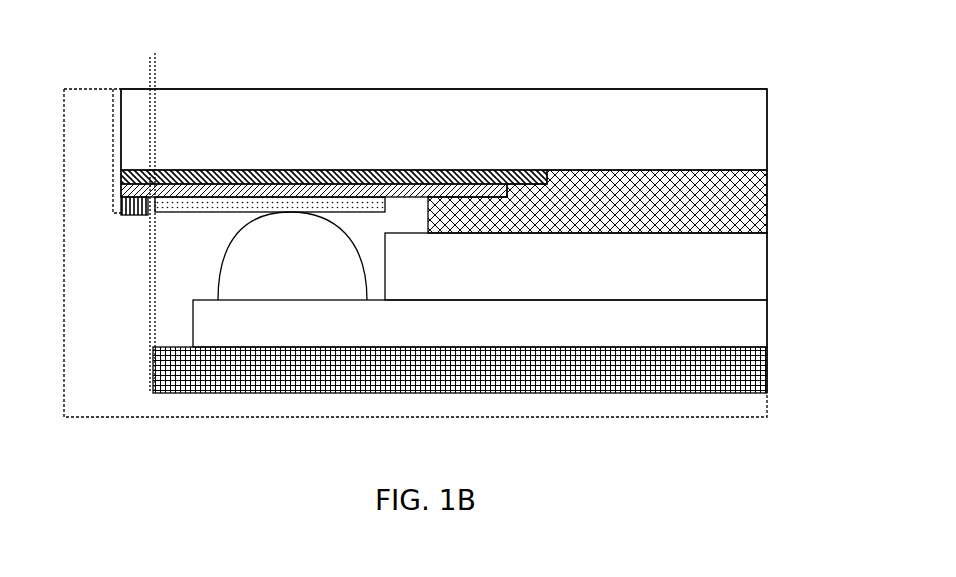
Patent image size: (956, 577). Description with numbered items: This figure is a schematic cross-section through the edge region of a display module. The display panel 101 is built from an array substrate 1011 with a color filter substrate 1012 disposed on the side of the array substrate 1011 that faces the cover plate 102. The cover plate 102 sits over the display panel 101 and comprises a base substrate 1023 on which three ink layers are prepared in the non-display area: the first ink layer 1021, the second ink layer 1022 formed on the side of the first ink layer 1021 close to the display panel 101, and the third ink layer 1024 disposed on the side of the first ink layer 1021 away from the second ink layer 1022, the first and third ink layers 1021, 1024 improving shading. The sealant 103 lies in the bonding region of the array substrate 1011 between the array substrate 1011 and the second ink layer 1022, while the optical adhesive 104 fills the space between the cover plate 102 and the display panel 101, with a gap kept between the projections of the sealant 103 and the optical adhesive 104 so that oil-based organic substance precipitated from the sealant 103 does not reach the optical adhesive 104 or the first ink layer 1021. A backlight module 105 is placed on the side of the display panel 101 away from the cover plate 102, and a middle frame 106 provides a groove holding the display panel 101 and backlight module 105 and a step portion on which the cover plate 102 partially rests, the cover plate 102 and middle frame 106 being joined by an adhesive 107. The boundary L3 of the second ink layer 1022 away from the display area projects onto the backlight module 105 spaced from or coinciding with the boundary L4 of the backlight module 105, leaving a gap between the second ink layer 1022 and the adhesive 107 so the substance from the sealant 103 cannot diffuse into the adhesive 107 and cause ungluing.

The display panel 101 is at (820, 263).
The array substrate 1011 is at (738, 332).
The color filter substrate 1012 is at (738, 273).
The cover plate 102 is at (467, 47).
The first ink layer 1021 is at (383, 170).
The second ink layer 1022 is at (329, 197).
The base substrate 1023 is at (443, 125).
The third ink layer 1024 is at (281, 170).
The sealant 103 is at (243, 267).
The optical adhesive 104 is at (747, 205).
The backlight module 105 is at (747, 377).
The middle frame 106 is at (82, 152).
The adhesive 107 is at (121, 213).
The boundary of the second ink layer L3 is at (156, 67).
The boundary of the backlight module L4 is at (150, 72).